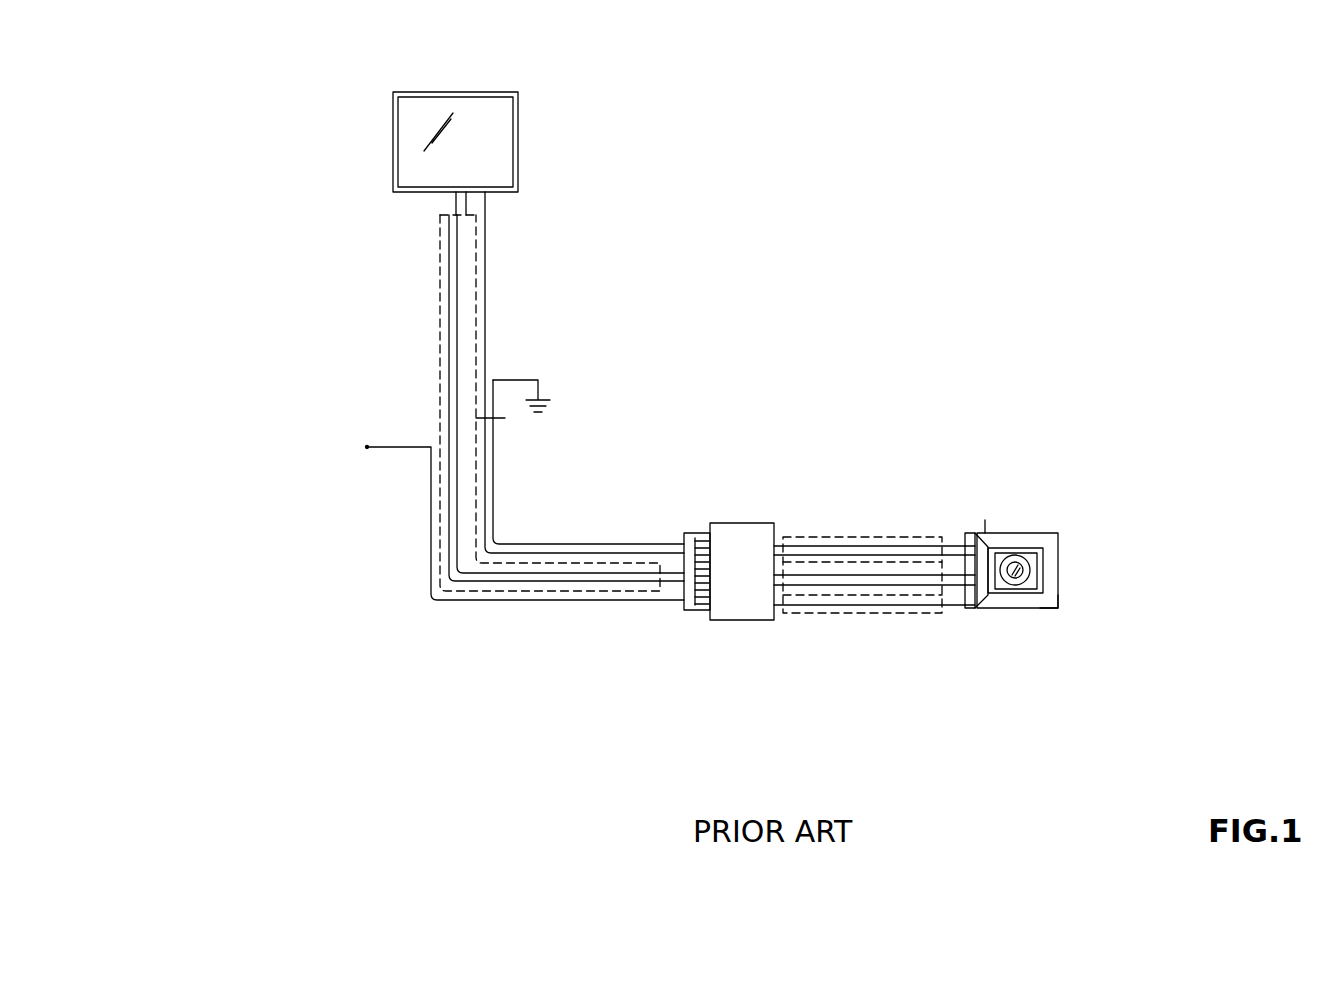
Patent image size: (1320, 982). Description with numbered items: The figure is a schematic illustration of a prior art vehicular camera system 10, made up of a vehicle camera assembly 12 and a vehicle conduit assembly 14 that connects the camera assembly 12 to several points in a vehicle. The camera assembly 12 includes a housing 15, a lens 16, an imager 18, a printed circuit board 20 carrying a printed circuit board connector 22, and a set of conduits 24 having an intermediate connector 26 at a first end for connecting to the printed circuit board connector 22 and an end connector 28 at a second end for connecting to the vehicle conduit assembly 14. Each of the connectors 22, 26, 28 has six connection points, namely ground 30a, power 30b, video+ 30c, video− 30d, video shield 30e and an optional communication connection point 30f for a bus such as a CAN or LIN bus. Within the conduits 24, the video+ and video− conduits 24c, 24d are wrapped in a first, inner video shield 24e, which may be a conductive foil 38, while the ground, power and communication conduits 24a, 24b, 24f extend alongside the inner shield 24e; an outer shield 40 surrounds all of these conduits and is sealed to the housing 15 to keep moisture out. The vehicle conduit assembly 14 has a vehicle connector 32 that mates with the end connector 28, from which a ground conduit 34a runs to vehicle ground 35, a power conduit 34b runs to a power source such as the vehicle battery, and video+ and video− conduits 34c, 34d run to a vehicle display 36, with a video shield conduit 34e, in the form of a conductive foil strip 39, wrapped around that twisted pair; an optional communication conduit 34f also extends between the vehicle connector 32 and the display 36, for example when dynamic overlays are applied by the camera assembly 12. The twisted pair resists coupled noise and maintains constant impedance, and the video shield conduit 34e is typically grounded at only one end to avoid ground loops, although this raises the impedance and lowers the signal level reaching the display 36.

The vehicular camera system 10 is at (1053, 126).
The vehicle camera assembly 12 is at (1055, 363).
The vehicle conduit assembly 14 is at (694, 272).
The housing 15 is at (1058, 600).
The lens 16 is at (1022, 570).
The imager 18 is at (1042, 553).
The printed circuit board 20 is at (1052, 540).
The printed circuit board connector 22 is at (985, 610).
The set of conduits 24 is at (856, 590).
The ground conduit 24a is at (880, 600).
The power conduit 24b is at (850, 612).
The video+ conduit 24c is at (820, 596).
The video− conduit 24d is at (860, 578).
The video shield 24e is at (820, 548).
The communication conduit 24f is at (845, 556).
The intermediate connector 26 is at (985, 520).
The end connector 28 is at (740, 522).
The ground connection point 30a is at (692, 545).
The power connection point 30b is at (702, 600).
The video+ connection point 30c is at (702, 612).
The video− connection point 30d is at (695, 590).
The video shield connection point 30e is at (690, 567).
The communication connection point 30f is at (690, 553).
The vehicle connector 32 is at (703, 628).
The ground conduit 34a is at (505, 553).
The power conduit 34b is at (431, 580).
The video+ conduit 34c is at (440, 250).
The video− conduit 34d is at (460, 325).
The video shield conduit 34e is at (485, 250).
The communication conduit 34f is at (512, 545).
The vehicle ground 35 is at (548, 398).
The vehicle display 36 is at (500, 150).
The conductive foil 38 is at (812, 553).
The conductive foil strip 39 is at (505, 418).
The outer shield 40 is at (876, 612).